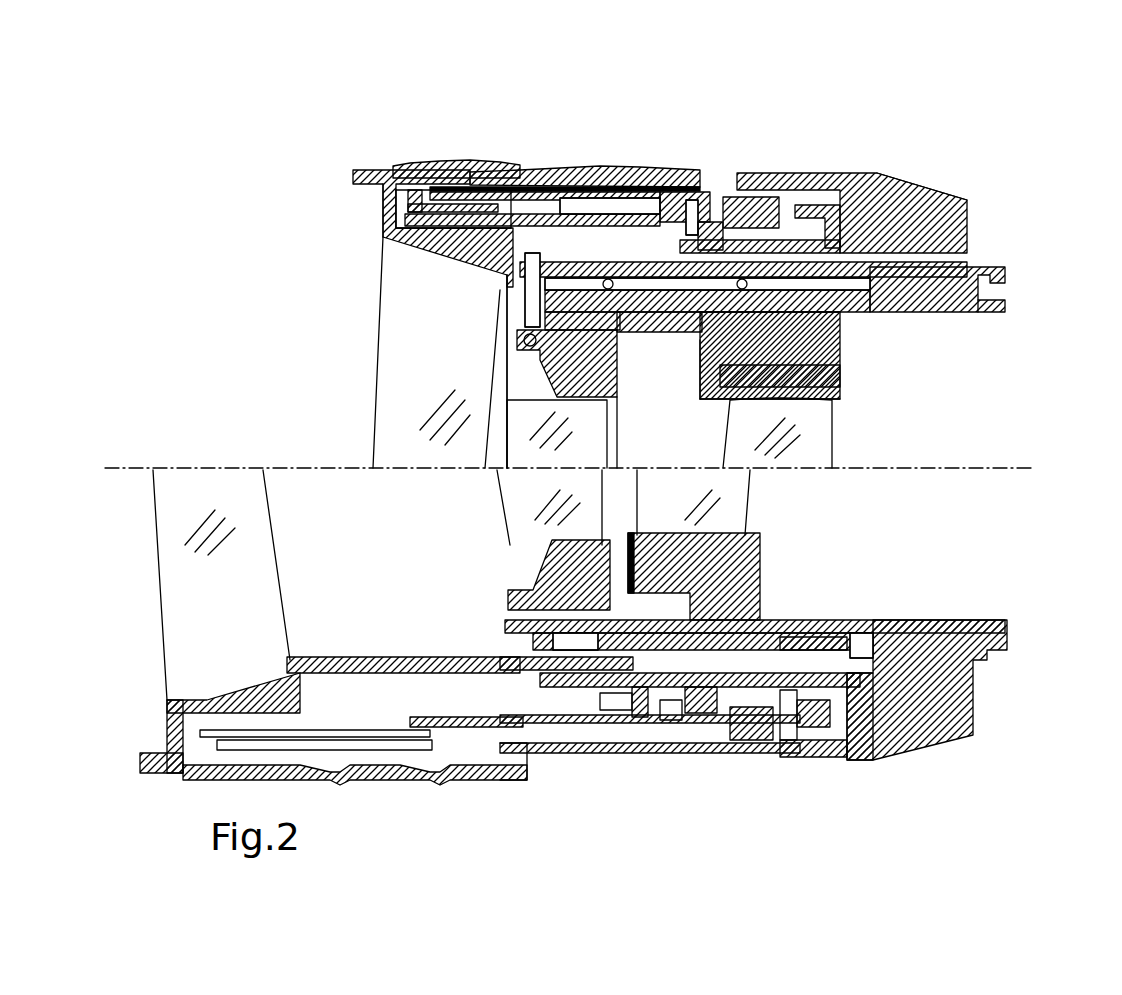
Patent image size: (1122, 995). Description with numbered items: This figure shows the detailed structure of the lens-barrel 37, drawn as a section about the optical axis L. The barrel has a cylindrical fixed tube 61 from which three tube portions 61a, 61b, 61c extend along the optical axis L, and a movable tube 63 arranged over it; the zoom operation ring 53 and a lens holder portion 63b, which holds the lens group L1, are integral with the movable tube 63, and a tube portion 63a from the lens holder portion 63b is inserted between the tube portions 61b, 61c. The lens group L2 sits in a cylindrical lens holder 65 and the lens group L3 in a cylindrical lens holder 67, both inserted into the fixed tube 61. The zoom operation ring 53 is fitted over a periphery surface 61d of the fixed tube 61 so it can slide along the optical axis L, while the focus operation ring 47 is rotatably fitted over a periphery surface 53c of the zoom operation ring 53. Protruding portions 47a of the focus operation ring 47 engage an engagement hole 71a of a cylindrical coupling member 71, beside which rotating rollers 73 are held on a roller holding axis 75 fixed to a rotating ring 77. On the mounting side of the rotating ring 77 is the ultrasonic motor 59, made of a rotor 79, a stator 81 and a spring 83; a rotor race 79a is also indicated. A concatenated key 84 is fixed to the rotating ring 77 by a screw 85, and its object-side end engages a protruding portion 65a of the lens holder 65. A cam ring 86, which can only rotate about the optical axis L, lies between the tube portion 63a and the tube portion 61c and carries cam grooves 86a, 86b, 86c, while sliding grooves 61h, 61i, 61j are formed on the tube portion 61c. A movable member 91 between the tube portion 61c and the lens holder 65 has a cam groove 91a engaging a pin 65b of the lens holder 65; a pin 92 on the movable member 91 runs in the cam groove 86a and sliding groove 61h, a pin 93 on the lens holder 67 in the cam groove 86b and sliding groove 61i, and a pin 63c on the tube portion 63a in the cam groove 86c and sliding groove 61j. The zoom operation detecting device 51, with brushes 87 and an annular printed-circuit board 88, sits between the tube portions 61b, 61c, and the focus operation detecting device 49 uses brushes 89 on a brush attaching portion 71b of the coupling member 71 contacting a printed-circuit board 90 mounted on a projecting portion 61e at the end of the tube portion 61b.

The lens-barrel 37 is at (1007, 97).
The focus operation ring 47 is at (440, 165).
The protruding portions 47a is at (412, 170).
The focus operation detecting device 49 is at (688, 838).
The zoom operation detecting device 51 is at (968, 522).
The zoom operation ring 53 is at (600, 167).
The periphery surface 53c is at (497, 192).
The ultrasonic motor 59 is at (730, 808).
The fixed tube 61 is at (880, 190).
The tube portion 61a is at (830, 175).
The tube portion 61b is at (815, 205).
The tube portion 61c is at (800, 363).
The periphery surface 61d is at (676, 192).
The projecting portion 61e is at (652, 743).
The sliding groove 61h is at (507, 290).
The sliding groove 61i is at (840, 330).
The sliding groove 61j is at (1005, 304).
The movable tube 63 is at (355, 165).
The tube portion 63a is at (548, 165).
The lens holder portion 63b is at (383, 228).
The pin 63c is at (950, 258).
The lens holder 65 is at (517, 338).
The protruding portion 65a is at (510, 628).
The pin 65b is at (642, 333).
The lens holder 67 is at (832, 405).
The coupling member 71 is at (470, 780).
The engagement hole 71a is at (445, 780).
The brush attaching portion 71b is at (563, 723).
The rotating roller 73 is at (727, 760).
The roller holding axis 75 is at (720, 200).
The rotating ring 77 is at (763, 620).
The rotor 79 is at (810, 745).
The ball bearing inner race 79a is at (713, 760).
The stator 81 is at (850, 740).
The spring 83 is at (870, 727).
The concatenated key 84 is at (525, 727).
The screw 85 is at (700, 240).
The cam ring 86 is at (805, 622).
The cam groove 86a is at (617, 400).
The cam groove 86b is at (700, 350).
The cam groove 86c is at (1005, 270).
The brushes 87 is at (858, 620).
The printed-circuit board 88 is at (887, 620).
The brushes 89 is at (612, 715).
The printed-circuit board 90 is at (605, 695).
The movable member 91 is at (527, 337).
The cam groove 91a is at (580, 198).
The pin 92 is at (525, 320).
The pin 93 is at (840, 387).
The optical axis L is at (582, 470).
The lens group L1 is at (395, 315).
The lens group L2 is at (588, 450).
The lens group L3 is at (820, 452).